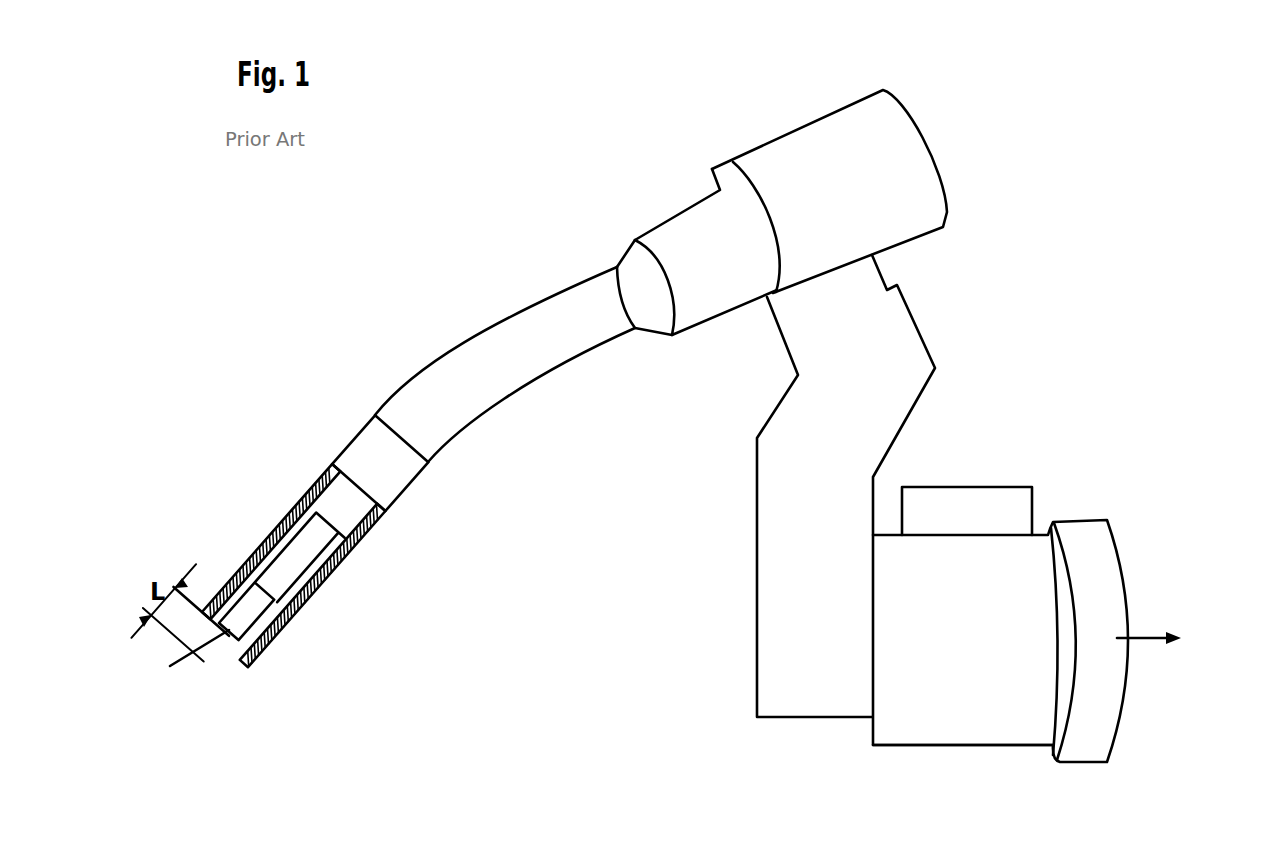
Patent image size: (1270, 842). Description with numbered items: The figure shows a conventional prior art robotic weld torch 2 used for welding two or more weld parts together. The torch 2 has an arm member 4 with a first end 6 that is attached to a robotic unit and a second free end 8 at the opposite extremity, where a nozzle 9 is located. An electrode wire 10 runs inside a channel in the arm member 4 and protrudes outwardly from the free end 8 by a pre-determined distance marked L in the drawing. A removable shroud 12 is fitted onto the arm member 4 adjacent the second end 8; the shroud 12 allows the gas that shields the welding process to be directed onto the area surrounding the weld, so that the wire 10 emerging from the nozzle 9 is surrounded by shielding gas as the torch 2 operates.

The robotic weld torch 2 is at (1066, 284).
The arm member 4 is at (570, 312).
The first end 6 is at (1153, 568).
The second free end 8 is at (212, 641).
The nozzle 9 is at (252, 613).
The electrode wire 10 is at (229, 674).
The removable shroud 12 is at (258, 544).